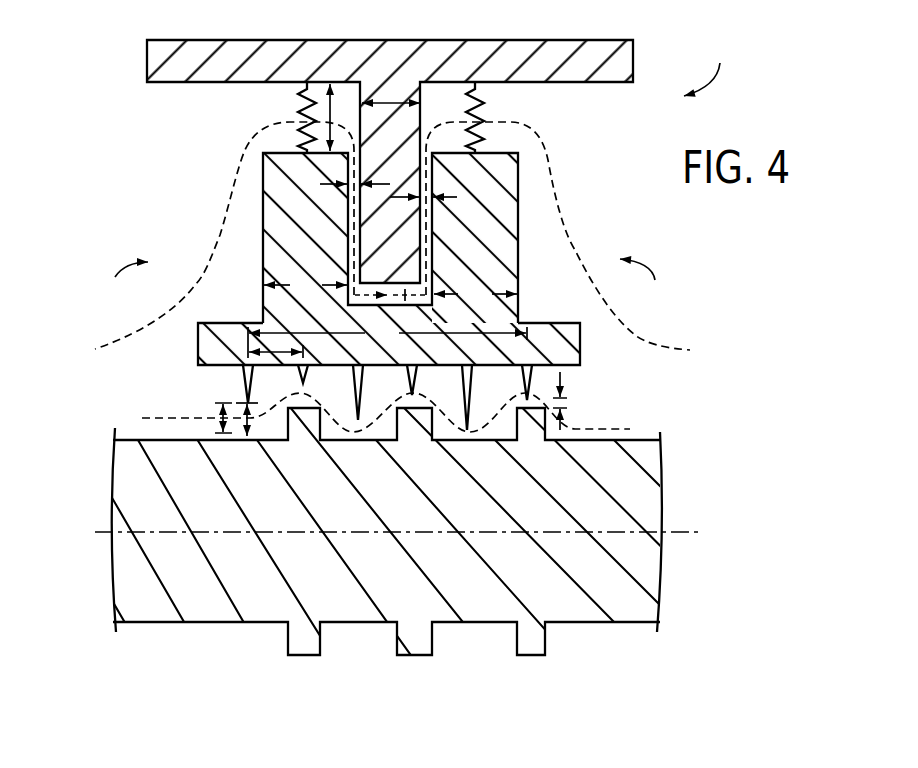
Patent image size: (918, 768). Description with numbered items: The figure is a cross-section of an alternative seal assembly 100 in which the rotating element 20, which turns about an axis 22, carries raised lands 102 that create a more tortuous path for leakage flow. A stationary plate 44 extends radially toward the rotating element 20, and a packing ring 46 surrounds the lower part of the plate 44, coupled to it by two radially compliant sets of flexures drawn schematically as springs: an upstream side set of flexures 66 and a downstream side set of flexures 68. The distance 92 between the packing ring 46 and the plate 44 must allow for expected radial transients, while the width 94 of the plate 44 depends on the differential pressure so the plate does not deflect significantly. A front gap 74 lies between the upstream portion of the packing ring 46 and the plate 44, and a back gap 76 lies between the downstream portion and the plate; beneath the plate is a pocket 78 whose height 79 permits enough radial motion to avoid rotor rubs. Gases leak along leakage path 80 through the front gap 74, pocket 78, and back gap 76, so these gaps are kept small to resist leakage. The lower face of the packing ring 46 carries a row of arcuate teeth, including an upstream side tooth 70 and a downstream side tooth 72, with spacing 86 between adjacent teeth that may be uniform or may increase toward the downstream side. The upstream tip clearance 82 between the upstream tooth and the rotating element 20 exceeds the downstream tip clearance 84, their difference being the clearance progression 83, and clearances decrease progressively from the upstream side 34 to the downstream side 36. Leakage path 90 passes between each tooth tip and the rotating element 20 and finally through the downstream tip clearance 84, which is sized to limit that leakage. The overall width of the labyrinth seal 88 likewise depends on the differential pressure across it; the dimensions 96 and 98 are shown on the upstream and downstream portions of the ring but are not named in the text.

The rotating element 20 is at (122, 582).
The axis 22 is at (683, 532).
The upstream side 34 is at (124, 285).
The downstream side 36 is at (644, 284).
The plate 44 is at (398, 80).
The packing ring 46 is at (414, 238).
The upstream side set of flexures 66 is at (307, 98).
The downstream side set of flexures 68 is at (482, 97).
The upstream side tooth 70 is at (247, 385).
The downstream side tooth 72 is at (523, 387).
The front gap 74 is at (327, 184).
The back gap 76 is at (453, 200).
The pocket 78 is at (357, 296).
The height of the pocket 79 is at (405, 300).
The leakage path 80 is at (665, 348).
The upstream tip clearance 82 is at (247, 437).
The clearance progression 83 is at (220, 418).
The downstream tip clearance 84 is at (565, 385).
The spacing 86 is at (272, 345).
The width of the labyrinth seal 88 is at (387, 340).
The leakage path 90 is at (617, 430).
The distance 92 is at (328, 150).
The width 94 is at (390, 100).
The first portion width 96 is at (305, 286).
The second portion width 98 is at (475, 295).
The seal assembly 100 is at (712, 66).
The raised lands 102 is at (286, 426).